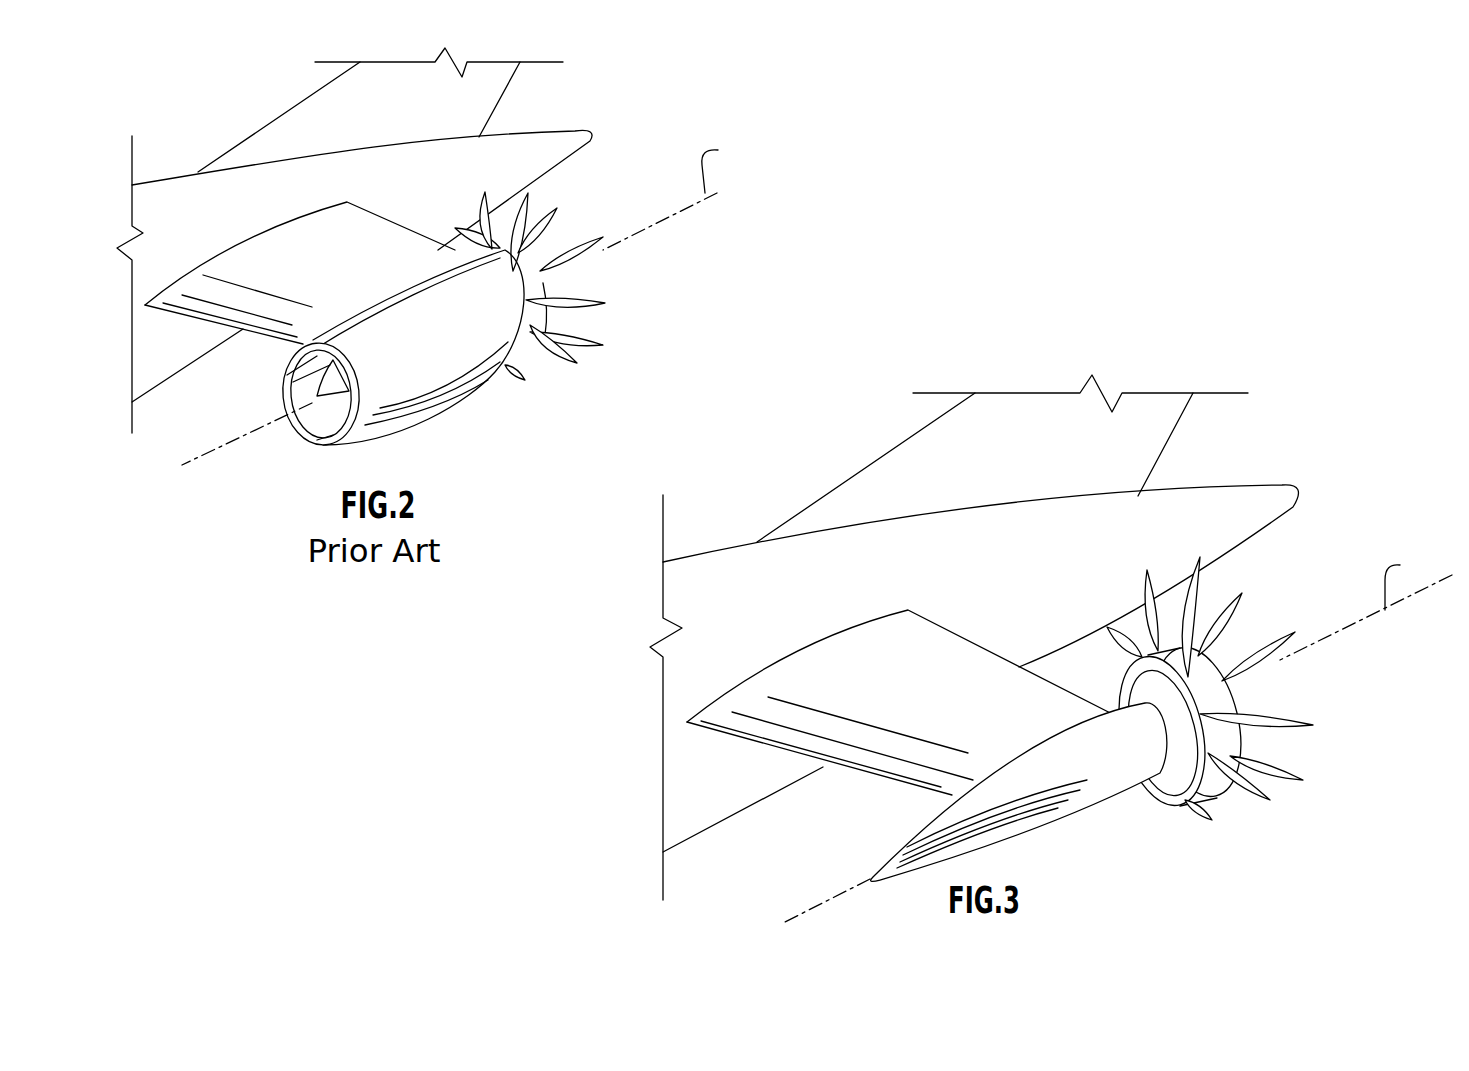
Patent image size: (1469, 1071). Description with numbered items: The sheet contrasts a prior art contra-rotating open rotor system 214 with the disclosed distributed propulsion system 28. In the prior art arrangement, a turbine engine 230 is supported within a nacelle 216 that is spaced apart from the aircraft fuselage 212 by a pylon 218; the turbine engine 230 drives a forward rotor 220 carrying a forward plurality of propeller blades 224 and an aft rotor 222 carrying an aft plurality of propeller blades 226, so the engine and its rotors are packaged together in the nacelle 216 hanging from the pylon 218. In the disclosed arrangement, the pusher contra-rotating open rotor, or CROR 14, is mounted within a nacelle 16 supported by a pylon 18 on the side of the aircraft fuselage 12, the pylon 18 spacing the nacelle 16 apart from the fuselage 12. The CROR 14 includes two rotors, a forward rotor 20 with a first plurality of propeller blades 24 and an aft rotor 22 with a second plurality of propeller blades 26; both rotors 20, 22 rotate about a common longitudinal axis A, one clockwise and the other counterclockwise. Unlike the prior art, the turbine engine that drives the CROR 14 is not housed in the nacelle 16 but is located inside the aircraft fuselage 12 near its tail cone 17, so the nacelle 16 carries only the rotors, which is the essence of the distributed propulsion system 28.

In FIG. 3, the aircraft fuselage 12 is at (698, 800).
In FIG. 3, the contra-rotating open rotor (CROR) 14 is at (1366, 618).
In FIG. 3, the nacelle 16 is at (1012, 803).
In FIG. 3, the tail cone 17 is at (1240, 488).
In FIG. 3, the pylon 18 is at (905, 747).
In FIG. 3, the forward rotor 20 is at (1175, 777).
In FIG. 3, the aft rotor 22 is at (1213, 670).
In FIG. 3, the first plurality of propeller blades 24 is at (1225, 797).
In FIG. 3, the second plurality of propeller blades 26 is at (1273, 777).
In FIG. 3, the distributed propulsion system 28 is at (750, 533).
In FIG. 2, the aircraft fuselage 212 is at (208, 203).
In FIG. 2, the prior art contra-rotating open rotor system 214 is at (696, 197).
In FIG. 2, the nacelle 216 is at (412, 388).
In FIG. 2, the pylon 218 is at (287, 308).
In FIG. 2, the forward rotor 220 is at (517, 318).
In FIG. 2, the aft rotor 222 is at (550, 235).
In FIG. 2, the forward plurality of propeller blades 224 is at (550, 367).
In FIG. 2, the aft plurality of propeller blades 226 is at (600, 240).
In FIG. 2, the turbine engine 230 is at (313, 416).